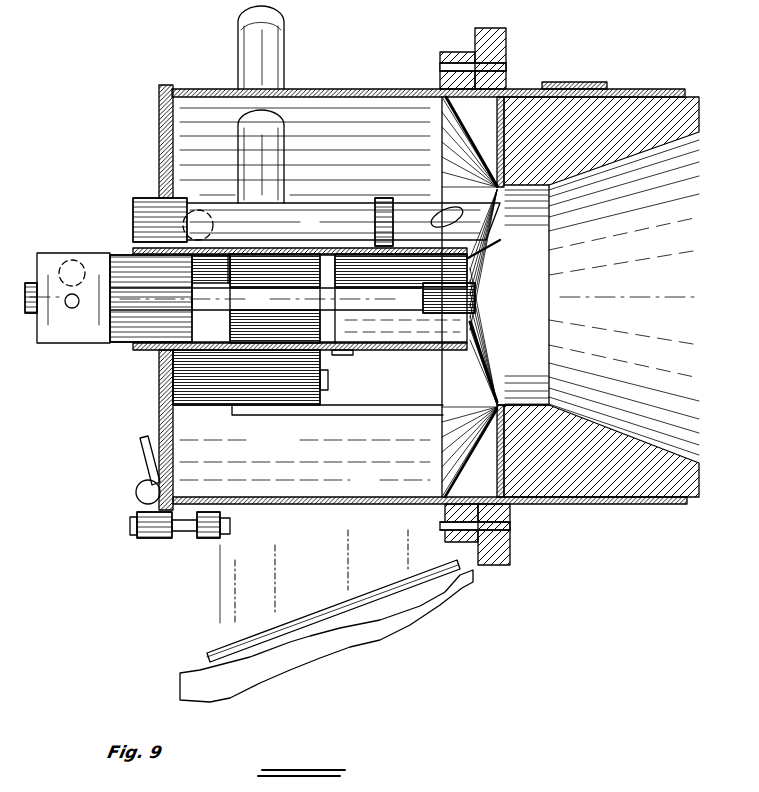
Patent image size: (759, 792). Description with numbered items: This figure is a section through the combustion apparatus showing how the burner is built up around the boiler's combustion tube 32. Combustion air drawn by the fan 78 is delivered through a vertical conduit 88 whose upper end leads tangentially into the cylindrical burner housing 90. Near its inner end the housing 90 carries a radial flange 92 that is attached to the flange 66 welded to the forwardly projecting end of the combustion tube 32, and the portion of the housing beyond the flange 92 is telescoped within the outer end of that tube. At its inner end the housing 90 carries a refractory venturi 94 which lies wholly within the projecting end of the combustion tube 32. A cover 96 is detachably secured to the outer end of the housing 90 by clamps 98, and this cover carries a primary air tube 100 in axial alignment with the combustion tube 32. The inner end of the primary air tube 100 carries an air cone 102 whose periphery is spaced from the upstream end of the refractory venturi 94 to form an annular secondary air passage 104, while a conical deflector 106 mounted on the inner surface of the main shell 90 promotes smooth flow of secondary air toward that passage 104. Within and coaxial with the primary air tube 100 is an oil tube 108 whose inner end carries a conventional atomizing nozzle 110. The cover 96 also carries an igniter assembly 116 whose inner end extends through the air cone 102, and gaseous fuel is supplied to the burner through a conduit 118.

The combustion tube 32 is at (562, 82).
The flange 66 is at (505, 35).
The fan 78 is at (193, 674).
The vertical conduit 88 is at (228, 553).
The burner housing 90 is at (366, 92).
The radial flange 92 is at (447, 52).
The refractory venturi 94 is at (640, 110).
The cover 96 is at (160, 126).
The clamps 98 is at (142, 491).
The primary air tube 100 is at (375, 350).
The air cone 102 is at (473, 367).
The annular secondary air passage 104 is at (500, 405).
The conical deflector 106 is at (470, 140).
The oil tube 108 is at (362, 300).
The atomizing nozzle 110 is at (477, 288).
The igniter assembly 116 is at (320, 196).
The conduit 118 is at (275, 40).